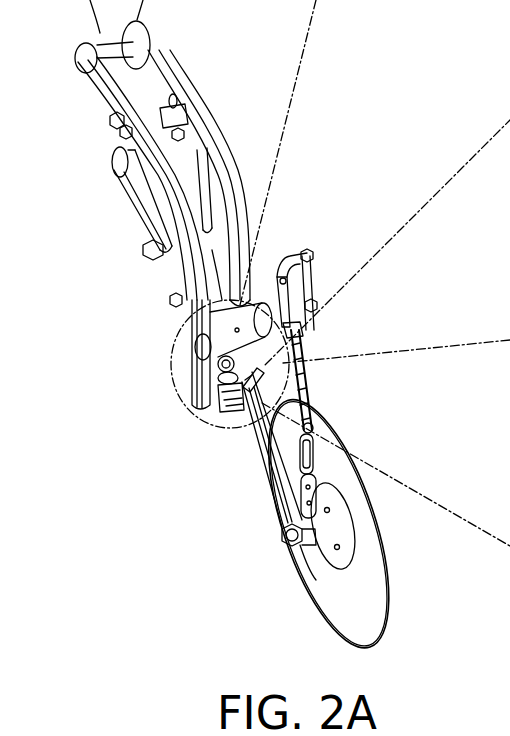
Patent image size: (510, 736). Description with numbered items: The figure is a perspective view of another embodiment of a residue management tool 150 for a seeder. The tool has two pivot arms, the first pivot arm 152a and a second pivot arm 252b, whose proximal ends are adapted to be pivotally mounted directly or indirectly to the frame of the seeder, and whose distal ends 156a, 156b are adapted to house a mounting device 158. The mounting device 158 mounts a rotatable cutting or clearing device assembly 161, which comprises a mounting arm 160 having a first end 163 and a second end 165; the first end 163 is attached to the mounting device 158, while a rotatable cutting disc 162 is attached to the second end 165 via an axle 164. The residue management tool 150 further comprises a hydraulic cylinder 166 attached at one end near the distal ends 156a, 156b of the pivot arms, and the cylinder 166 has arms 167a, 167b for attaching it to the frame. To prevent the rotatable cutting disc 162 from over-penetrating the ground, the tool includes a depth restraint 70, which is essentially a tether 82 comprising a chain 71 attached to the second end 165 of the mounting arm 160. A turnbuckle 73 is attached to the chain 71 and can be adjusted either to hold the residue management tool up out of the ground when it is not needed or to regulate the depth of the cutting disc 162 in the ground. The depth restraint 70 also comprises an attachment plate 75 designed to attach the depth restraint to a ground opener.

The residue management tool 150 is at (100, 148).
The pivot arm 152a is at (100, 97).
The lower parallel arm 252b is at (177, 67).
The arm 167a is at (137, 197).
The arm 167b is at (190, 205).
The hydraulic cylinder 166 is at (212, 273).
The distal end 156a is at (195, 398).
The distal end 156b is at (295, 360).
The mounting device 158 is at (312, 268).
The attachment plate 75 is at (283, 247).
The turnbuckle 73 is at (305, 340).
The tether 82 is at (264, 376).
The first end 163 is at (318, 408).
The depth restraint 70 is at (312, 404).
The chain 71 is at (340, 480).
The mounting arm 160 is at (257, 450).
The axle 164 is at (282, 543).
The second end 165 is at (305, 580).
The rotatable cutting disc 162 is at (367, 543).
The rotatable cutting or clearing device assembly 161 is at (398, 612).